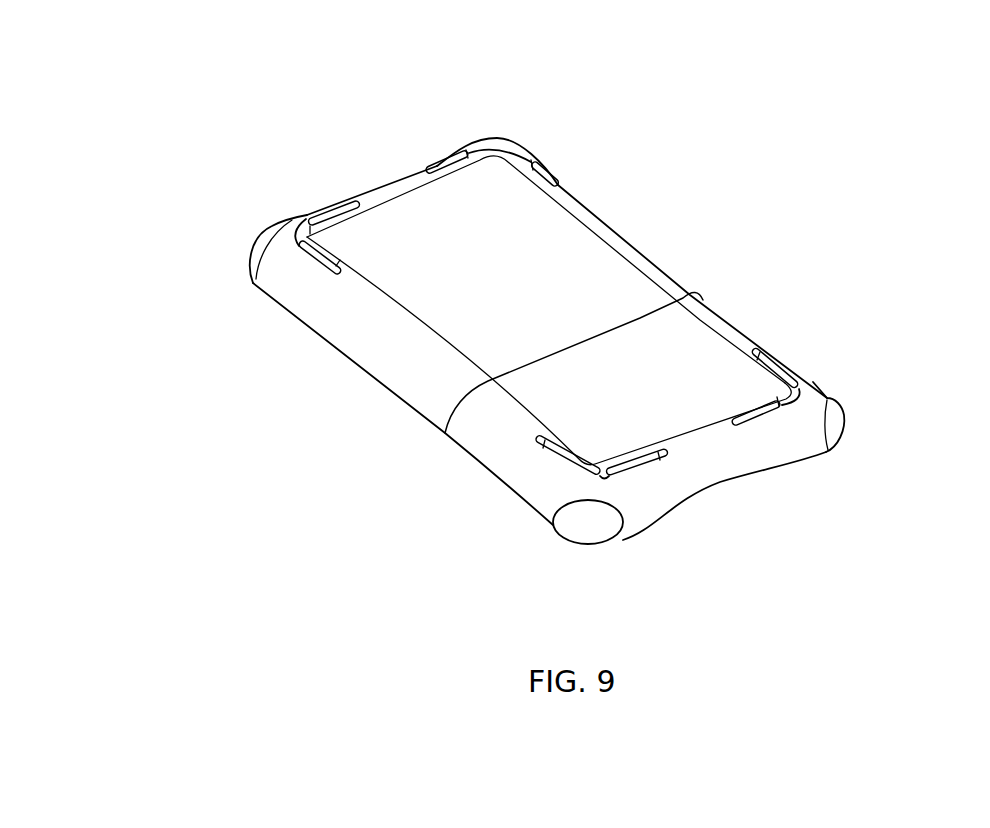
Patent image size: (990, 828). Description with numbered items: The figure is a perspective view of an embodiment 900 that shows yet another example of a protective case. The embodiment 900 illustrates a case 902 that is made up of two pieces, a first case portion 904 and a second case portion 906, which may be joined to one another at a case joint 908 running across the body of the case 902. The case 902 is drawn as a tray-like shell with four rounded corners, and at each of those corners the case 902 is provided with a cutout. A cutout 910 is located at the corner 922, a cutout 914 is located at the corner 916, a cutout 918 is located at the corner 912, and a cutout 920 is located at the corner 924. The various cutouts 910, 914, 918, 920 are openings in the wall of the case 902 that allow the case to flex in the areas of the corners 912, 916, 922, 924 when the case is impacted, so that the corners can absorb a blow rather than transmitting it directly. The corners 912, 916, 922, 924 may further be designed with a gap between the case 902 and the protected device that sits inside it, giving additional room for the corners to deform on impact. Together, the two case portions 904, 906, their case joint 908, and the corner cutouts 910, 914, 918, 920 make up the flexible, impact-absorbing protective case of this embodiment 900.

The embodiment 900 is at (317, 481).
The case 902 is at (393, 336).
The case portion 904 is at (625, 248).
The case portion 906 is at (733, 335).
The case joint 908 is at (692, 295).
The cutout 910 is at (780, 403).
The corner 912 is at (253, 258).
The cutout 914 is at (558, 458).
The corner 916 is at (582, 532).
The cutout 918 is at (303, 224).
The cutout 920 is at (538, 168).
The corner 922 is at (837, 437).
The corner 924 is at (513, 142).